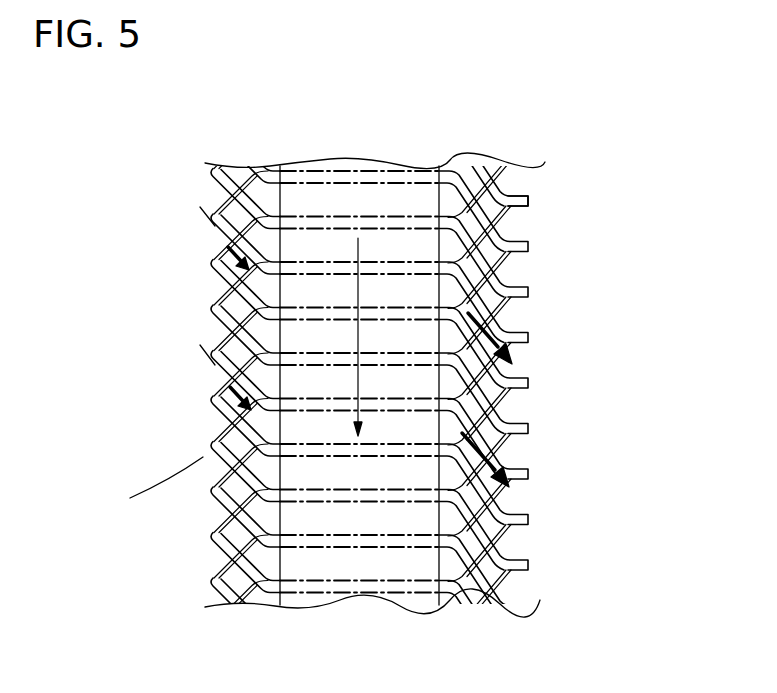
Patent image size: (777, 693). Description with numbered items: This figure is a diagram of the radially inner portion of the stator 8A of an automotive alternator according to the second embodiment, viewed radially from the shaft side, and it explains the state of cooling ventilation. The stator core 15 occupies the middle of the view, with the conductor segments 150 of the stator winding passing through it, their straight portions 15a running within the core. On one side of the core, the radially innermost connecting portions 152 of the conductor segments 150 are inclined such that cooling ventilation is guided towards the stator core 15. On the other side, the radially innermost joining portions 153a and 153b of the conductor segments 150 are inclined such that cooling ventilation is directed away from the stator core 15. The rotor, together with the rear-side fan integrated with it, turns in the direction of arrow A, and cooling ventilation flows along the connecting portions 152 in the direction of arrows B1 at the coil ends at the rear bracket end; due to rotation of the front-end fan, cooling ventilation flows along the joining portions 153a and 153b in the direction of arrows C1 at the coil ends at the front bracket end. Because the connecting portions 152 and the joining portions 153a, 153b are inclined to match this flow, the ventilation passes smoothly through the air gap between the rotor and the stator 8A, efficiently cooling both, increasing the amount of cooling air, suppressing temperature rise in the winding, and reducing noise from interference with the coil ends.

The stator 8A is at (384, 121).
The stator core 15 is at (350, 583).
The straight portion of conductor segment 15a is at (433, 213).
The conductor segments 150 is at (112, 537).
The connecting portions 152 is at (203, 325).
The joining portions 153a is at (500, 412).
The joining portions 153b is at (500, 267).
The arrow A is at (500, 327).
The arrows B1 is at (203, 223).
The arrows C1 is at (500, 350).